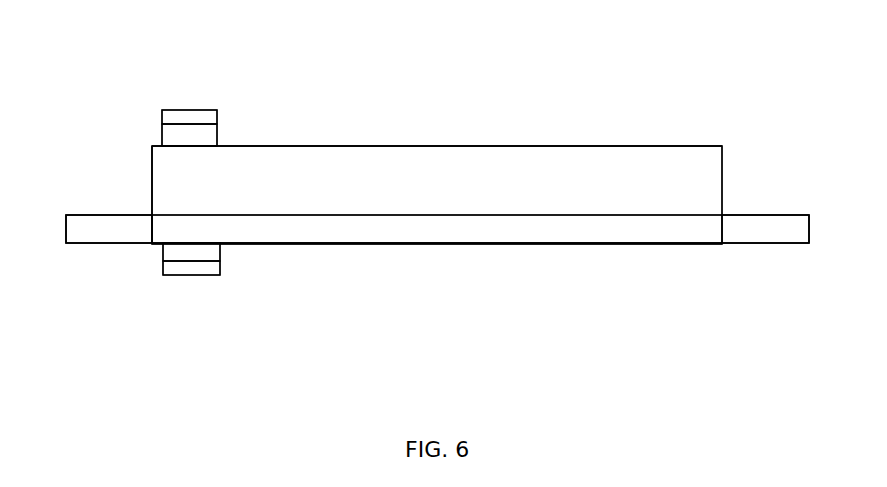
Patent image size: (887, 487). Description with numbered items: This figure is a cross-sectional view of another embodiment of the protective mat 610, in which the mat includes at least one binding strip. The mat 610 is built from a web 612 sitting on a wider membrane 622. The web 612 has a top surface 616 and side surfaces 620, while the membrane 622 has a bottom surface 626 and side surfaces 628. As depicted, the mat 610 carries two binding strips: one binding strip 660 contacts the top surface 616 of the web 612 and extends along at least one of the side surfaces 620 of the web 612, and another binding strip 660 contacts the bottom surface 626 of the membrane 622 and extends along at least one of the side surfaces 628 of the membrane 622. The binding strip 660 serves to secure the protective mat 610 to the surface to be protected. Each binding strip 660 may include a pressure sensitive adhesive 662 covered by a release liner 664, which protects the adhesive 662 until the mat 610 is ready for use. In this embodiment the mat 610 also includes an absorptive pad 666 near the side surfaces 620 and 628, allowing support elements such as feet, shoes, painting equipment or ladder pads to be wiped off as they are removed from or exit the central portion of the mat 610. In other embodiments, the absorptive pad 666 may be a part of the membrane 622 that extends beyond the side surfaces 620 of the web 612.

The mat 610 is at (472, 84).
The web 612 is at (667, 177).
The top surface of the web 616 is at (563, 145).
The side surface of the web 620 is at (152, 177).
The membrane 622 is at (634, 227).
The bottom surface of the membrane 626 is at (506, 244).
The side surface of the membrane 628 is at (150, 226).
The binding strip 660 is at (188, 76).
The pressure sensitive adhesive 662 is at (195, 138).
The release liner 664 is at (197, 118).
The absorptive pad 666 is at (92, 225).